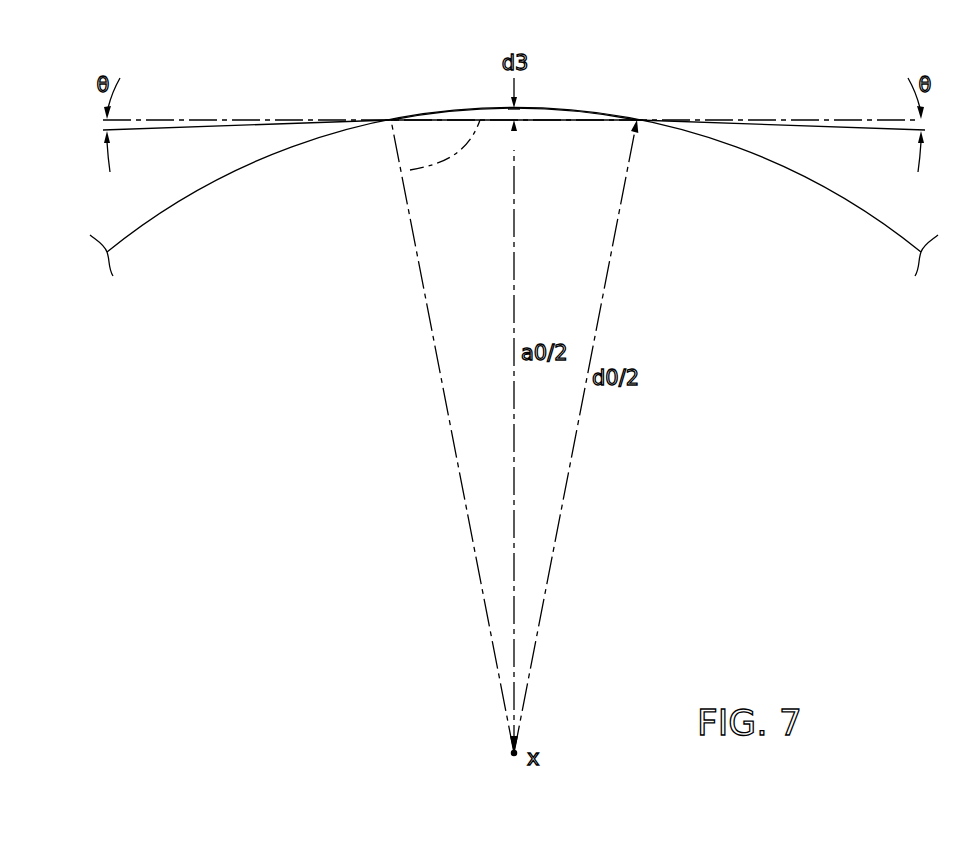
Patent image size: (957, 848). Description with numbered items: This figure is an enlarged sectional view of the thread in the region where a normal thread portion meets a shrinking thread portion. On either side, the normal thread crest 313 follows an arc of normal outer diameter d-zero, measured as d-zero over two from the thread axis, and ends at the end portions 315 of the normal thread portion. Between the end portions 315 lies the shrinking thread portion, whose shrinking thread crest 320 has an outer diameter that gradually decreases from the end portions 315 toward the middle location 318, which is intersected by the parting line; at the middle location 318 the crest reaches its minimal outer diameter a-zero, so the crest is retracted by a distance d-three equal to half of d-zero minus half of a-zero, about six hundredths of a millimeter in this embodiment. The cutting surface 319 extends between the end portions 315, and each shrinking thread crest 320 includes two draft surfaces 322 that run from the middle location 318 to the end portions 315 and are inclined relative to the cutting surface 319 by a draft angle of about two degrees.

The normal thread crest 313 is at (237, 170).
The end portions 315 is at (391, 120).
The middle location 318 is at (516, 110).
The cutting surface 319 is at (410, 170).
The shrinking thread crest 320 is at (452, 118).
The draft surfaces 322 is at (588, 114).